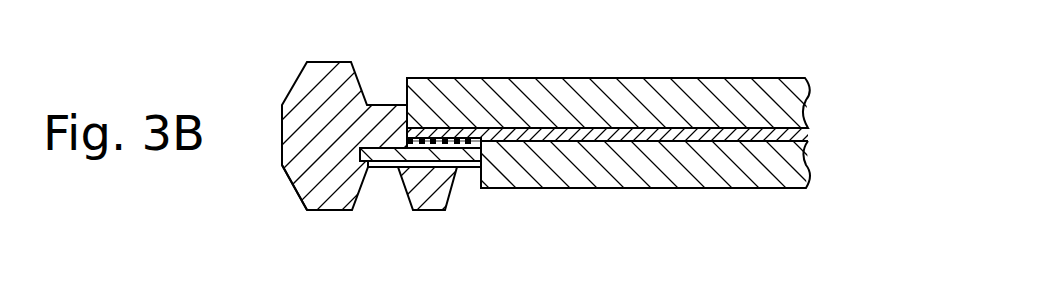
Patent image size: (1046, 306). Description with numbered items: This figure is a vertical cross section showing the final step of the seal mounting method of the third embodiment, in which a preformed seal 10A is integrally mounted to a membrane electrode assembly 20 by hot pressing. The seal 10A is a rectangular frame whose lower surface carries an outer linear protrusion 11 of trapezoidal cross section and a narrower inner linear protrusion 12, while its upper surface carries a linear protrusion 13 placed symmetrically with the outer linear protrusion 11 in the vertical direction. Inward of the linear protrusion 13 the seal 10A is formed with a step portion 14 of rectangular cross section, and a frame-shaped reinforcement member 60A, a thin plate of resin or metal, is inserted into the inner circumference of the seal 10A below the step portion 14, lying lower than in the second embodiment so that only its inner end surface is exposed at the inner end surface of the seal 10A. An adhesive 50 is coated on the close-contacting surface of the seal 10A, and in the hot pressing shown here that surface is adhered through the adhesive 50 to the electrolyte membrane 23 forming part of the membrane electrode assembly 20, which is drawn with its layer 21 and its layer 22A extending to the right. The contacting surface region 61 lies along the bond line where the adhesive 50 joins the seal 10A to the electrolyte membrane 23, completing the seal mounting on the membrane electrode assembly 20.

The seal 10A is at (280, 131).
The outer linear protrusion 11 is at (291, 182).
The inner linear protrusion 12 is at (426, 212).
The linear protrusion 13 is at (327, 61).
The step portion 14 is at (383, 104).
The membrane electrode assembly 20 is at (622, 107).
The base film 21 is at (638, 77).
The reinforcing plate 22A is at (792, 163).
The electrolyte membrane 23 is at (708, 127).
The adhesive 50 is at (471, 138).
The reinforcement member 60A is at (384, 153).
The close-contacting surface 61 is at (442, 138).